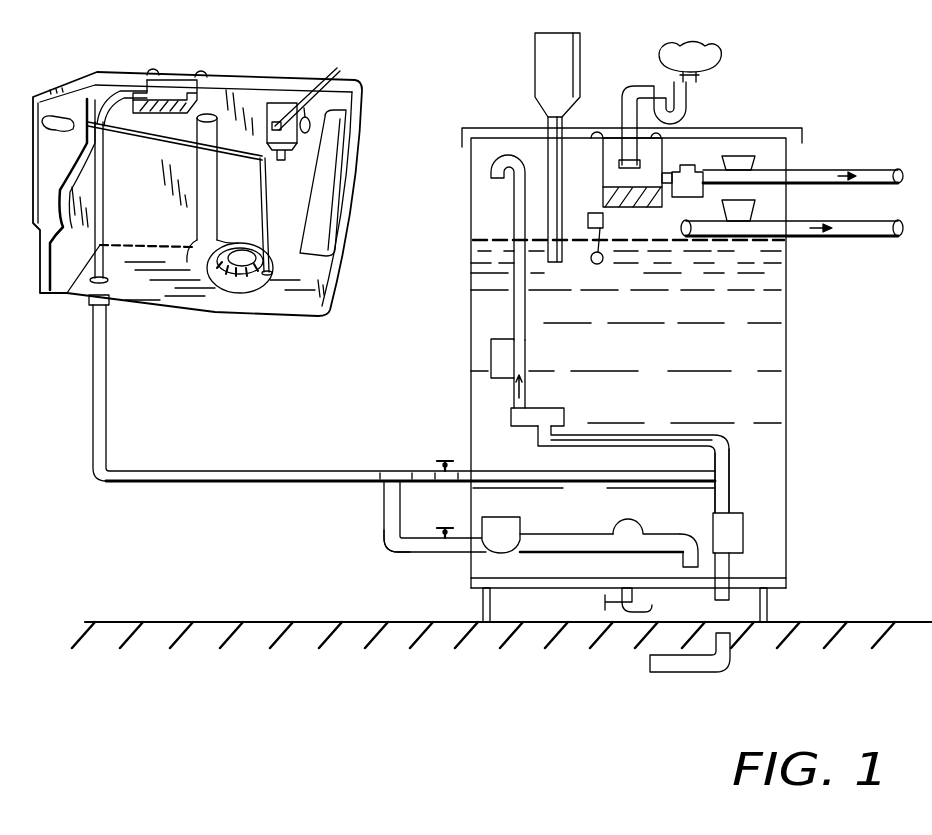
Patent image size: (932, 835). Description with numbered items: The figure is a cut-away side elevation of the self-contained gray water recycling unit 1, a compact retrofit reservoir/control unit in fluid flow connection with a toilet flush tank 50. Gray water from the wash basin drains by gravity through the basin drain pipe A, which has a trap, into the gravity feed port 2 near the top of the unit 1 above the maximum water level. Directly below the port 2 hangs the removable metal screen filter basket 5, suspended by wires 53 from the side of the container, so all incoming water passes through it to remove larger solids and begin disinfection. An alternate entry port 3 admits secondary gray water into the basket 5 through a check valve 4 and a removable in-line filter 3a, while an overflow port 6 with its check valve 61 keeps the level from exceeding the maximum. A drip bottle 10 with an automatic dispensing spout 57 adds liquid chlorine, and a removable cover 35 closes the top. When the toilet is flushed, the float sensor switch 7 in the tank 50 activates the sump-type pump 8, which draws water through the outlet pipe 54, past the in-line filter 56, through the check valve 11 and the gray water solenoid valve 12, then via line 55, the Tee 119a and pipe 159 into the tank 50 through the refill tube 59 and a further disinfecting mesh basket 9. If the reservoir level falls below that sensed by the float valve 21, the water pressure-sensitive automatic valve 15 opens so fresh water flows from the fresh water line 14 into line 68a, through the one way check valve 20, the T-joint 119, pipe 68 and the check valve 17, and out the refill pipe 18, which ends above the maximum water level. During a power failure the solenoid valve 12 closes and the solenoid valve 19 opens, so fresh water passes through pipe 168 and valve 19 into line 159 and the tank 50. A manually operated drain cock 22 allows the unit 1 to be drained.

The self-contained gray water recycling unit 1 is at (790, 397).
The gravity feed port 2 is at (624, 104).
The alternate entry port 3 is at (902, 177).
The removable in-line filter 3a is at (687, 181).
The check valve 4 is at (748, 169).
The removable metal screen filter basket 5 is at (603, 198).
The overflow port 6 is at (900, 223).
The float sensor switch 7 is at (283, 103).
The sump-type pump 8 is at (646, 535).
The disinfecting mesh basket 9 is at (167, 80).
The drip bottle 10 is at (540, 62).
The check valve 11 is at (501, 535).
The solenoid valve 12 is at (445, 557).
The fresh water line 14 is at (668, 663).
The water pressure-sensitive automatic valve 15 is at (530, 418).
The check valve 17 is at (491, 359).
The refill pipe 18 is at (511, 173).
The solenoid valve 19 is at (440, 461).
The one way check valve 20 is at (728, 533).
The float valve 21 is at (602, 252).
The manually operated drain cock 22 is at (640, 606).
The removable cover 35 is at (738, 124).
The toilet flush tank 50 is at (360, 204).
The wires 53 is at (603, 164).
The outlet pipe 54 is at (587, 554).
The line 55 is at (390, 553).
The in-line filter 56 is at (669, 557).
The automatic dispensing spout 57 is at (548, 172).
The refill tube 59 is at (107, 183).
The check valve 61 is at (747, 216).
The pipe 68 is at (653, 434).
The fresh water line 68a is at (733, 573).
The T-joint 119 is at (731, 469).
The Tee 119a is at (388, 488).
The pipe 159 is at (190, 468).
The pipe 168 is at (607, 488).
The basin drain pipe A is at (700, 80).